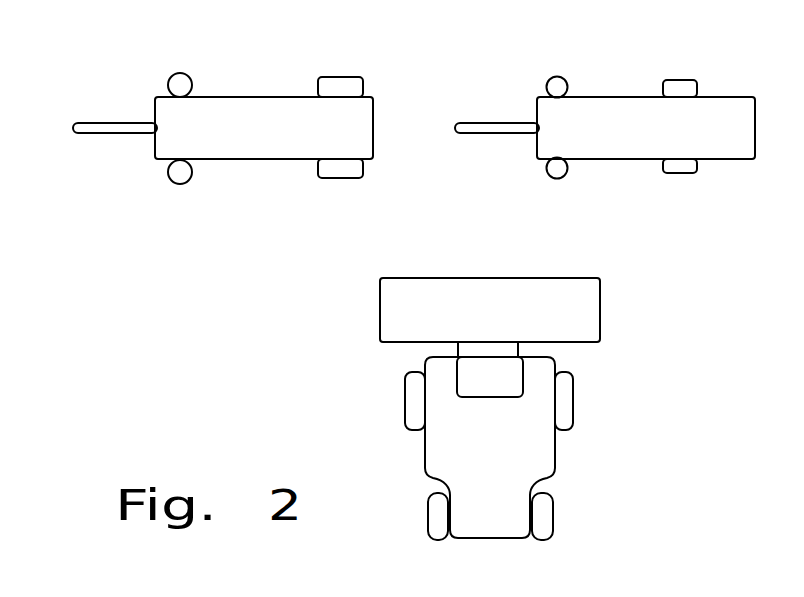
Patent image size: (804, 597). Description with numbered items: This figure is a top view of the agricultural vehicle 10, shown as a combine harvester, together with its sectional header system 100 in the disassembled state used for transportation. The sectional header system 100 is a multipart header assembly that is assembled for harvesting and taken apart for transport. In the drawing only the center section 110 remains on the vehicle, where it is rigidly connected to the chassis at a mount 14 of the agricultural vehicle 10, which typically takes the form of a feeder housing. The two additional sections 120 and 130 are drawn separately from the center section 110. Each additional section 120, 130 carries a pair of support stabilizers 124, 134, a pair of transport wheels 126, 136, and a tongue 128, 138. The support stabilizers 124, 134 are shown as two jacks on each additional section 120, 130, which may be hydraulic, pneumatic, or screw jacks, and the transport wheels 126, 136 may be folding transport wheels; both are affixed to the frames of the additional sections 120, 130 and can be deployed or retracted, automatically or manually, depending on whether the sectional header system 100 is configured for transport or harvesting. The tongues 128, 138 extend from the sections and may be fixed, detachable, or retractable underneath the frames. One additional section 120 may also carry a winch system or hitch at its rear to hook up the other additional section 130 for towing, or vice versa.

The sectional header system 100 is at (288, 327).
The agricultural vehicle 10 is at (555, 453).
The mount 14 is at (520, 347).
The center section 110 is at (512, 323).
The additional section 120 is at (283, 147).
The support stabilizers 124 is at (180, 73).
The transport wheels 126 is at (340, 77).
The tongue 128 is at (90, 123).
The additional section 130 is at (642, 143).
The support stabilizers 134 is at (552, 78).
The transport wheels 136 is at (682, 80).
The tongue 138 is at (500, 123).